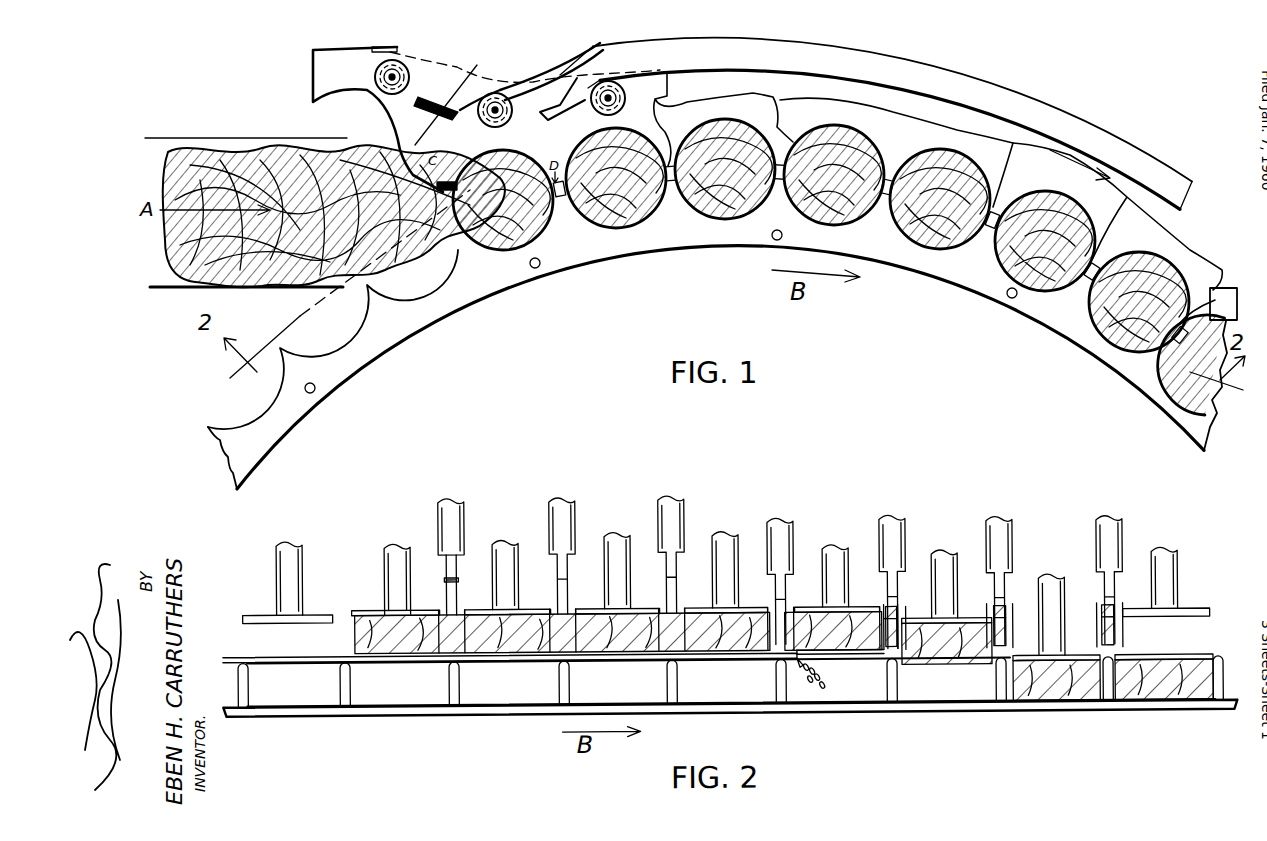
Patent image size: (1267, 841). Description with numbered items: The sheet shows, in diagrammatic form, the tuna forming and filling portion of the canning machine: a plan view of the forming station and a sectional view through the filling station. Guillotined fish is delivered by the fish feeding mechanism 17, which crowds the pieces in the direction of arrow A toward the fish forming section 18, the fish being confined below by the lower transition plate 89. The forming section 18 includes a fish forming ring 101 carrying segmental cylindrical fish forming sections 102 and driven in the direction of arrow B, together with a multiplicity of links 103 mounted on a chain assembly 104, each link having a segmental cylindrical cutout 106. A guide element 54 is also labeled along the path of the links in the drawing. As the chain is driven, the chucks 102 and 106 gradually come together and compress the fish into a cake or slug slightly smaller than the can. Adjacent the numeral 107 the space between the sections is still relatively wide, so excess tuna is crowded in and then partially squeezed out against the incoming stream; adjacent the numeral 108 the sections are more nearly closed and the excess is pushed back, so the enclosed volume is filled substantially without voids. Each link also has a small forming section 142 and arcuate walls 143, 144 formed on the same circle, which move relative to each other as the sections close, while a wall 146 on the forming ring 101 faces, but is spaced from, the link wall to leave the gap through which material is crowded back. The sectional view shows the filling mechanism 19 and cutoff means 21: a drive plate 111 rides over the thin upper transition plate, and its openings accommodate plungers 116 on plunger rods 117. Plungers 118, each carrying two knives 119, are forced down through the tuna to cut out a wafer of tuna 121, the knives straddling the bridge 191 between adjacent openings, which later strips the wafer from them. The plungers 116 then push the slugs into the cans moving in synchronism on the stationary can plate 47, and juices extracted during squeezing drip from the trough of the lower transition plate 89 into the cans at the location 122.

In FIG. 1, the fish feeding mechanism 17 is at (199, 130).
In FIG. 1, the fish forming section 18 is at (650, 265).
In FIG. 2, the mechanism for filling the containers with fish 19 is at (365, 538).
In FIG. 2, the cutoff means 21 is at (915, 570).
In FIG. 2, the stationary can plate 47 is at (845, 707).
In FIG. 1, the guide plate 54 is at (1106, 234).
In FIG. 2, the lower transition plate 89 is at (307, 660).
In FIG. 1, the fish forming ring 101 is at (716, 235).
In FIG. 1, the fish forming sections 102 is at (528, 283).
In FIG. 1, the links 103 is at (737, 100).
In FIG. 1, the chain assembly 104 is at (857, 104).
In FIG. 1, the segmental cylindrical cutouts 106 is at (738, 123).
In FIG. 1, the region where forming sections begin to close 107 is at (453, 177).
In FIG. 1, the region where forming sections are nearly closed 108 is at (566, 215).
In FIG. 2, the drive plate 111 is at (458, 600).
In FIG. 2, the plungers 116 is at (527, 612).
In FIG. 2, the plunger rods 117 is at (509, 576).
In FIG. 2, the plungers 118 is at (466, 518).
In FIG. 2, the knives 119 is at (459, 574).
In FIG. 2, the wafer of tuna 121 is at (899, 622).
In FIG. 2, the juice drip location 122 is at (807, 677).
In FIG. 1, the small forming section 142 is at (410, 155).
In FIG. 1, the arcuate wall 143 is at (413, 95).
In FIG. 1, the arcuate wall 144 is at (472, 67).
In FIG. 1, the wall 146 is at (675, 195).
In FIG. 2, the bridge 191 is at (1100, 605).